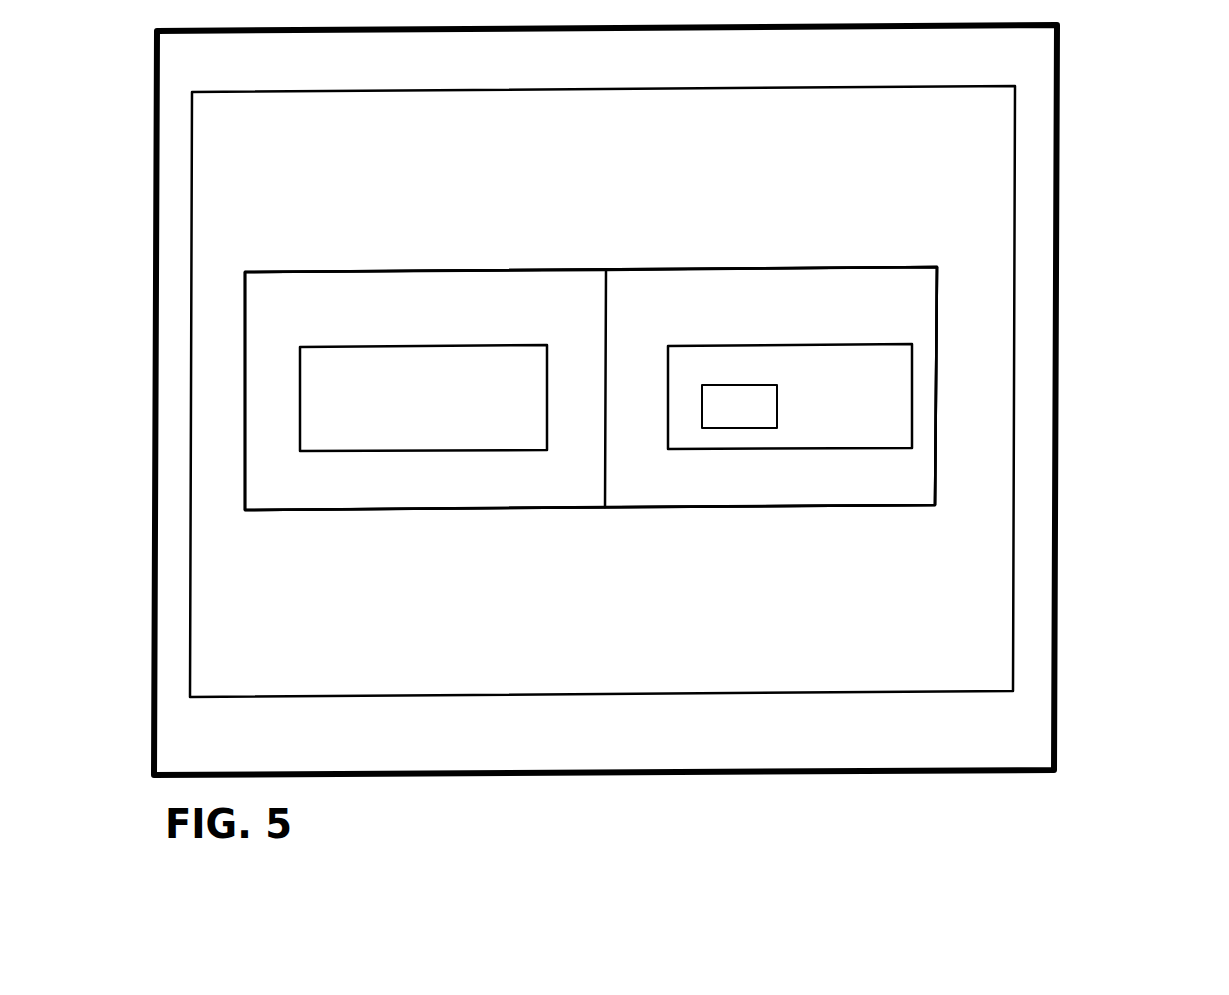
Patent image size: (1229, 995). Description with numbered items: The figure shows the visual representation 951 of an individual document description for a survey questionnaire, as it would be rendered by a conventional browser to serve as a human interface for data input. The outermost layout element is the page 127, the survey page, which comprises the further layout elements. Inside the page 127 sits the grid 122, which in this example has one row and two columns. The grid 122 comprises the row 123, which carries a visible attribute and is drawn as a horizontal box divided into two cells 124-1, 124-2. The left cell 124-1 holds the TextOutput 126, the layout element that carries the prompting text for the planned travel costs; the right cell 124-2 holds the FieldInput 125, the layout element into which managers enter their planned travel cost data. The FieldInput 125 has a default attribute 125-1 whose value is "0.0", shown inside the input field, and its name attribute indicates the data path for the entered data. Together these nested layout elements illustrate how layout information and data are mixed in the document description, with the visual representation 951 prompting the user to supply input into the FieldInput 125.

The visual representation 951 is at (1060, 43).
The page 127 is at (1017, 405).
The grid 122 is at (940, 345).
The row 123 is at (926, 292).
The cell 124-1 is at (378, 290).
The cell 124-2 is at (713, 284).
The TextOutput 126 is at (405, 347).
The FieldInput 125 is at (768, 345).
The default attribute 125-1 is at (777, 389).